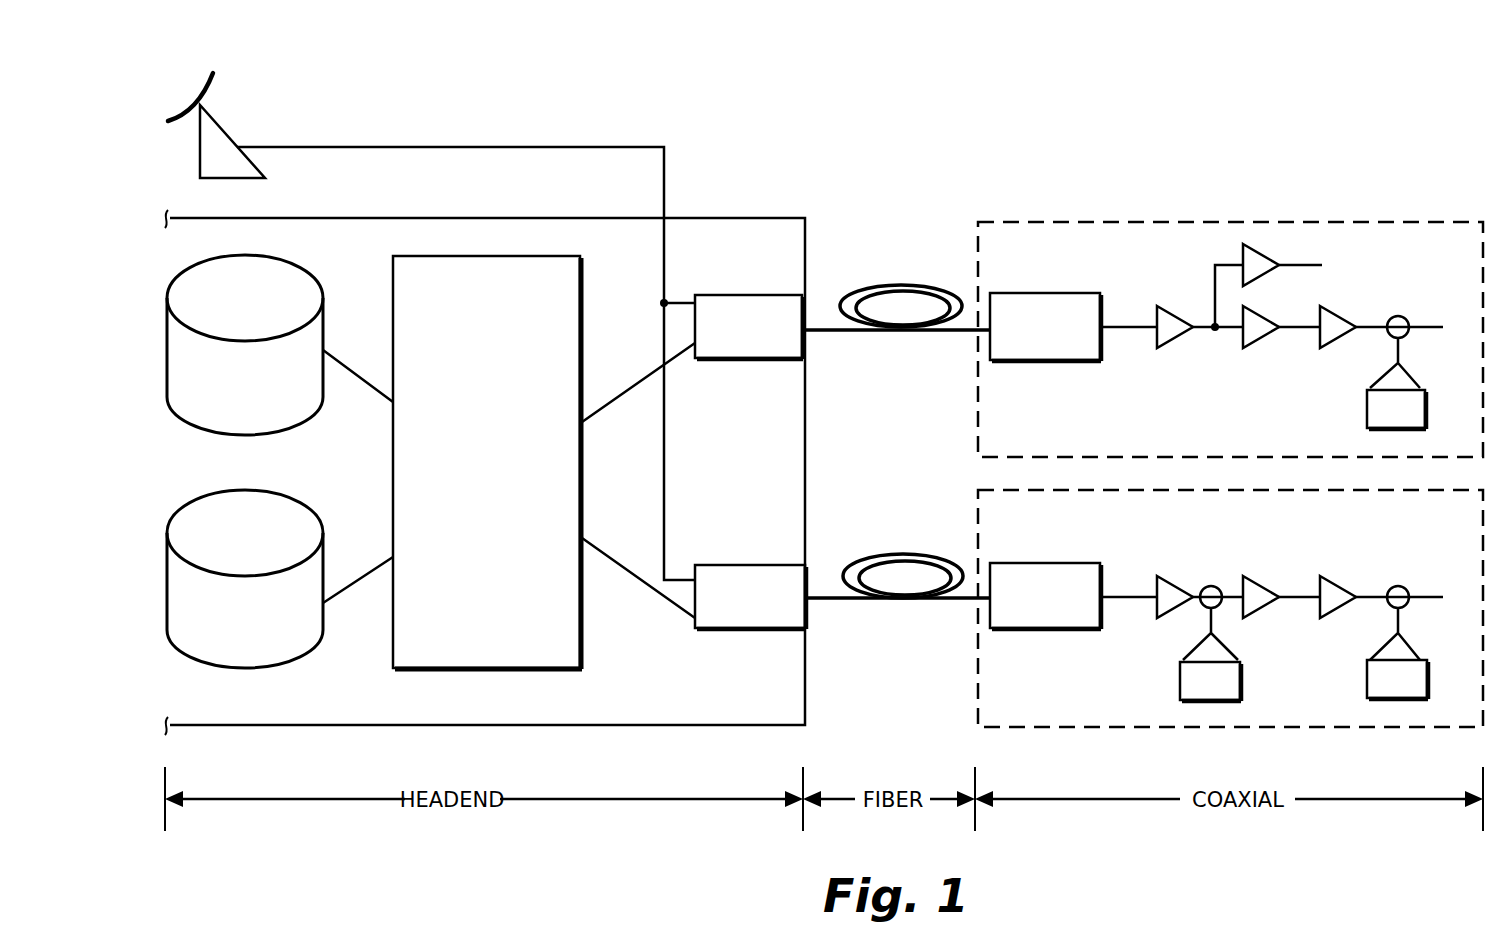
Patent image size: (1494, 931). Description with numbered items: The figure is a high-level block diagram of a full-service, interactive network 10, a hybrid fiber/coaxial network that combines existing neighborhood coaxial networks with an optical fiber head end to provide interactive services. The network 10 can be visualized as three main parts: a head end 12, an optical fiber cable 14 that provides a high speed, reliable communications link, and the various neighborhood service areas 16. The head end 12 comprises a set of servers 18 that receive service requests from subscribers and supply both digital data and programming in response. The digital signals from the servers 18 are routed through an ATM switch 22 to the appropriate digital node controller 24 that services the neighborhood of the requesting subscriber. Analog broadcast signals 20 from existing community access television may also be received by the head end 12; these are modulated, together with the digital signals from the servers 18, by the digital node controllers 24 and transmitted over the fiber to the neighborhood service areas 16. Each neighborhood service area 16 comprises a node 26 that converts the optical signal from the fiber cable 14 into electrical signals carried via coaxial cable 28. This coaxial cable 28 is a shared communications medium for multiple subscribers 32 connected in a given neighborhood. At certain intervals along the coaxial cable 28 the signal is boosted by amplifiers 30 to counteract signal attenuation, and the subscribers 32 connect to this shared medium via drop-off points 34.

The network 10 is at (972, 120).
The head end 12 is at (728, 218).
The optical fiber cable 14 is at (900, 286).
The neighborhood service area 16 is at (1135, 222).
The servers 18 is at (323, 323).
The analog broadcast signals 20 is at (223, 131).
The ATM switch 22 is at (582, 337).
The digital node controller 24 is at (757, 296).
The node 26 is at (1048, 293).
The coaxial cable 28 is at (1127, 327).
The amplifiers 30 is at (1255, 278).
The subscribers 32 is at (1367, 418).
The drop-off points 34 is at (1398, 316).